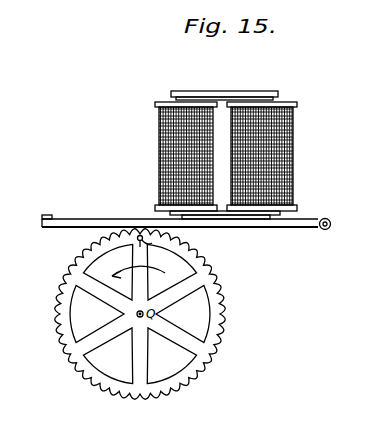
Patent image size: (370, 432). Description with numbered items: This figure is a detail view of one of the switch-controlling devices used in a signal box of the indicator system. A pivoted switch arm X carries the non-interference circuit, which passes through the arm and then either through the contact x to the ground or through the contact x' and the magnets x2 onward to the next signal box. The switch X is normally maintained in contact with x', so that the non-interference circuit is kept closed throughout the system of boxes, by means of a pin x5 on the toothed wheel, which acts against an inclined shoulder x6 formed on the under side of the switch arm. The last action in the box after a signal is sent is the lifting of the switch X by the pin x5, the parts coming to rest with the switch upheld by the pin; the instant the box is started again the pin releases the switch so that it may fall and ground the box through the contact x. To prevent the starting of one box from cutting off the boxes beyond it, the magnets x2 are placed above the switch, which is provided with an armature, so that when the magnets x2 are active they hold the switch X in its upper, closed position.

The switch arm X is at (186, 235).
The contact x is at (225, 226).
The contact x' is at (48, 205).
The magnets x2 is at (234, 151).
The pin x5 is at (150, 245).
The inclined shoulder x6 is at (139, 235).